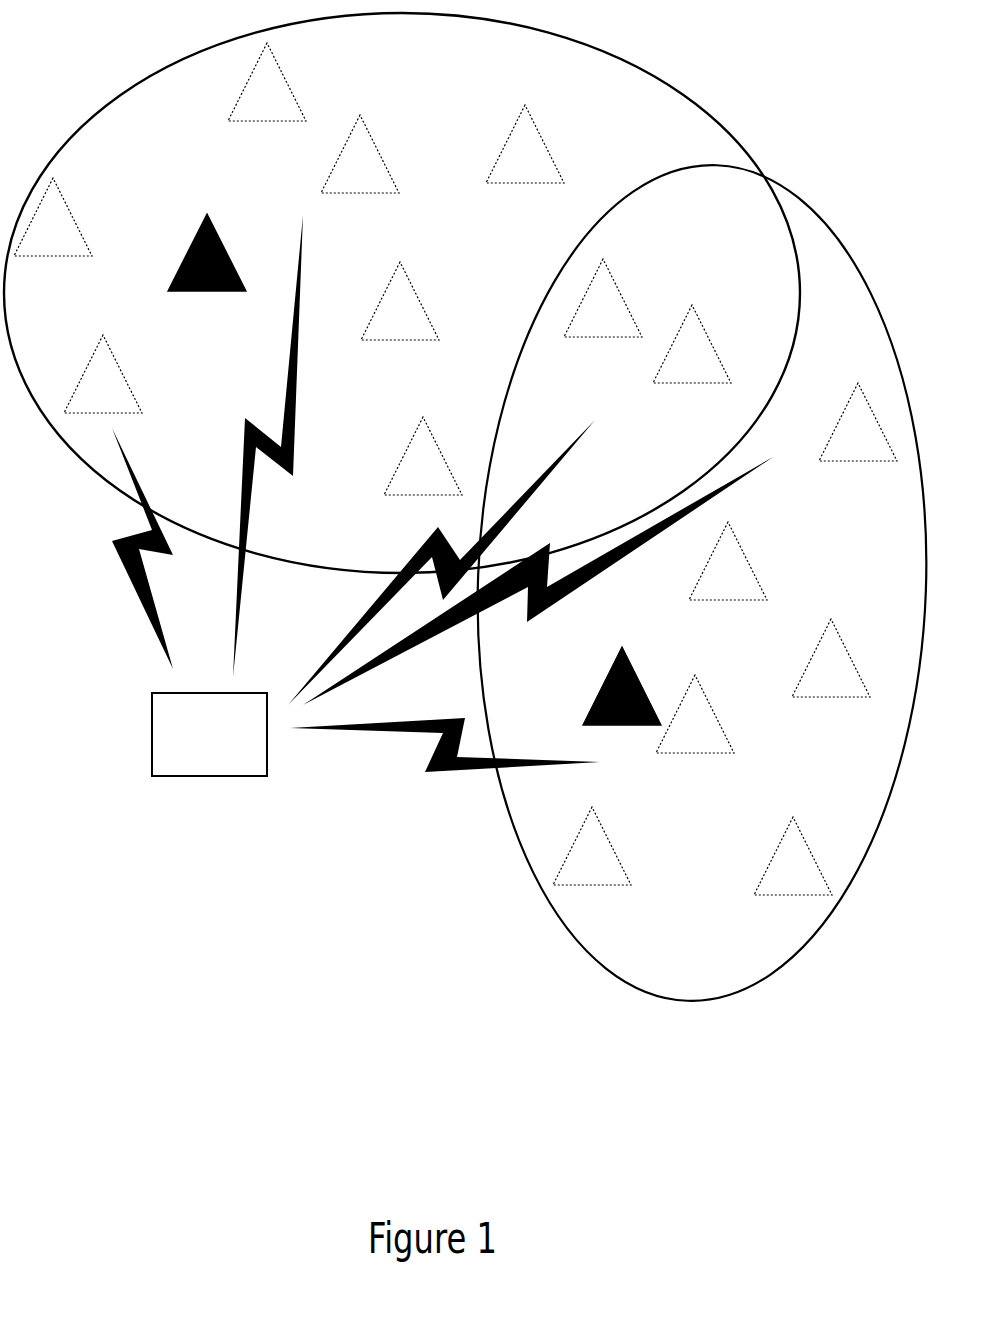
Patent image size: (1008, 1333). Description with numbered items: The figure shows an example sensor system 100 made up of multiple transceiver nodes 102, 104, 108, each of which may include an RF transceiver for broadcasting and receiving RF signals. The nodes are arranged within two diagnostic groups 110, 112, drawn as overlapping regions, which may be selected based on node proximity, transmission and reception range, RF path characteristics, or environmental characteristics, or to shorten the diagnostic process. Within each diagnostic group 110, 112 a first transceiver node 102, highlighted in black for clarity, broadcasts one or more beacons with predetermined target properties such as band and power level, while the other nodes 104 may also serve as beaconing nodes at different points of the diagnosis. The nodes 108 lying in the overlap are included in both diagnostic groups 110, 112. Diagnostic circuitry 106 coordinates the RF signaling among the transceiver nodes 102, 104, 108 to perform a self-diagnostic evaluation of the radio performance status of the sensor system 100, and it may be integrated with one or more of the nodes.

The sensor system 100 is at (79, 38).
The first transceiver node 102 is at (222, 277).
The transceiver node 104 is at (282, 107).
The diagnostic circuitry 106 is at (223, 744).
The transceiver node 108 is at (618, 323).
The diagnostic group 110 is at (663, 76).
The diagnostic group 112 is at (828, 240).